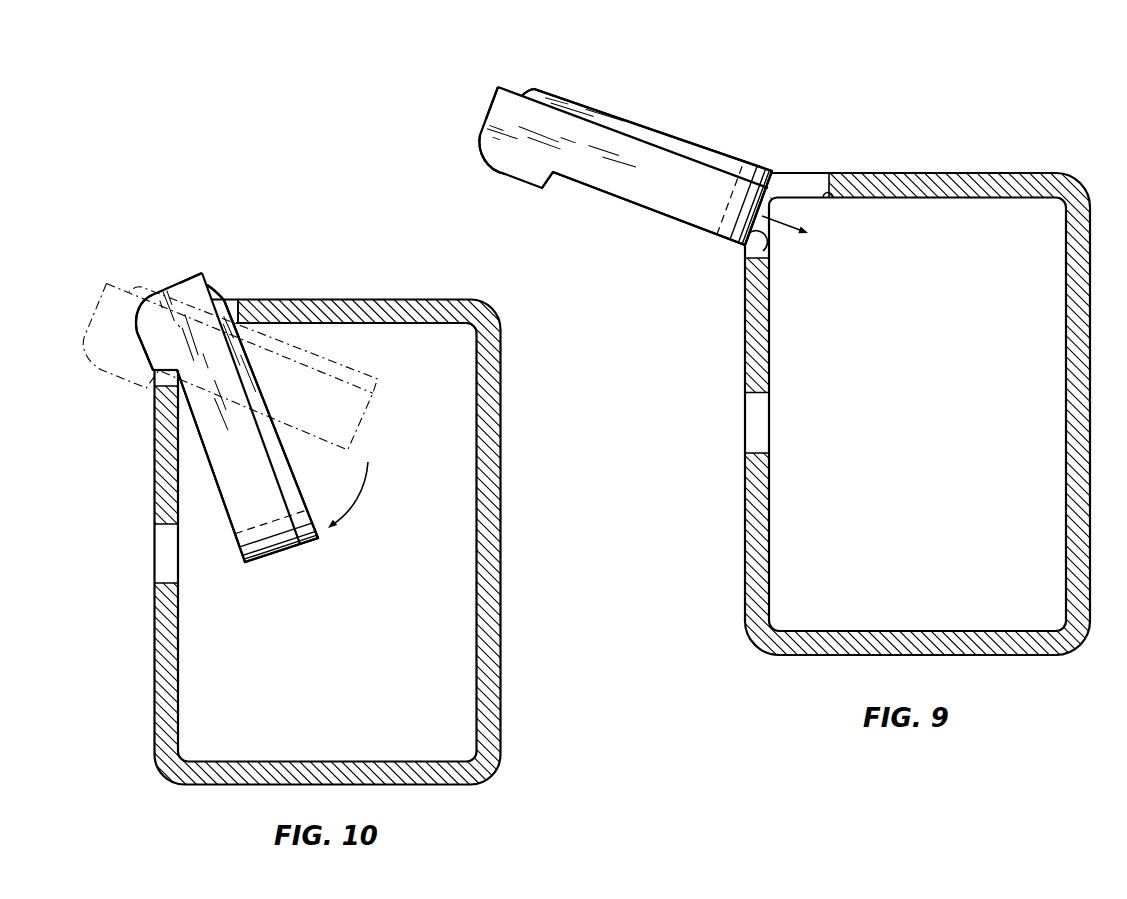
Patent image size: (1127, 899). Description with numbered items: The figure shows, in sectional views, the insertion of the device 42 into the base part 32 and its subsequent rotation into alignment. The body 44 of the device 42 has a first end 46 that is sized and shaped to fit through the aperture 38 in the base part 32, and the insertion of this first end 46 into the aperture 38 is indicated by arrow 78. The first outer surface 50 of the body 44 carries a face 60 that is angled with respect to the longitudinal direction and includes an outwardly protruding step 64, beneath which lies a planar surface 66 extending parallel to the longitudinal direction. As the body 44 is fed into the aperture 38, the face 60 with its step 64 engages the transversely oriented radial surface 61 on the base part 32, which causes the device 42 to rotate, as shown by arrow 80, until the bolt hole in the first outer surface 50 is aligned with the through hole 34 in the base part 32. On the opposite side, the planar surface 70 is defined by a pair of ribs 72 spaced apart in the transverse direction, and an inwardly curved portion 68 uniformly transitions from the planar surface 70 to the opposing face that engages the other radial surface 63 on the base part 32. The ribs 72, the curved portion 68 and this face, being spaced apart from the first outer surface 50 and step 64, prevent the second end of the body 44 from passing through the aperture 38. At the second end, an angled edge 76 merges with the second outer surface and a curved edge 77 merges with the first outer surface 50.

In FIG. 9, the base part 32 is at (1064, 172).
In FIG. 10, the base part 32 is at (476, 300).
In FIG. 9, the through hole 34 is at (764, 435).
In FIG. 10, the through hole 34 is at (152, 558).
In FIG. 9, the aperture 38 is at (815, 158).
In FIG. 9, the device 42 is at (486, 119).
In FIG. 10, the device 42 is at (178, 282).
In FIG. 9, the body 44 is at (638, 190).
In FIG. 10, the body 44 is at (257, 481).
In FIG. 9, the first end 46 is at (745, 246).
In FIG. 10, the first end 46 is at (277, 553).
In FIG. 10, the first outer surface 50 is at (207, 465).
In FIG. 9, the face 60 is at (563, 190).
In FIG. 9, the radial surface 61 is at (770, 248).
In FIG. 10, the radial surface 61 is at (156, 378).
In FIG. 9, the radial surface 63 is at (826, 204).
In FIG. 10, the radial surface 63 is at (221, 301).
In FIG. 9, the outwardly protruding step 64 is at (549, 191).
In FIG. 10, the outwardly protruding step 64 is at (152, 370).
In FIG. 9, the planar surface 66 is at (664, 218).
In FIG. 10, the planar surface 66 is at (226, 518).
In FIG. 9, the inwardly curved portion 68 is at (557, 77).
In FIG. 10, the inwardly curved portion 68 is at (231, 301).
In FIG. 9, the planar surface 70 is at (667, 128).
In FIG. 10, the planar surface 70 is at (287, 447).
In FIG. 9, the ribs 72 is at (693, 153).
In FIG. 10, the ribs 72 is at (293, 488).
In FIG. 9, the angled edge 76 is at (498, 86).
In FIG. 10, the angled edge 76 is at (202, 272).
In FIG. 9, the curved edge 77 is at (482, 162).
In FIG. 10, the curved edge 77 is at (136, 307).
In FIG. 9, the arrow 78 is at (770, 217).
In FIG. 10, the arrow 80 is at (364, 494).